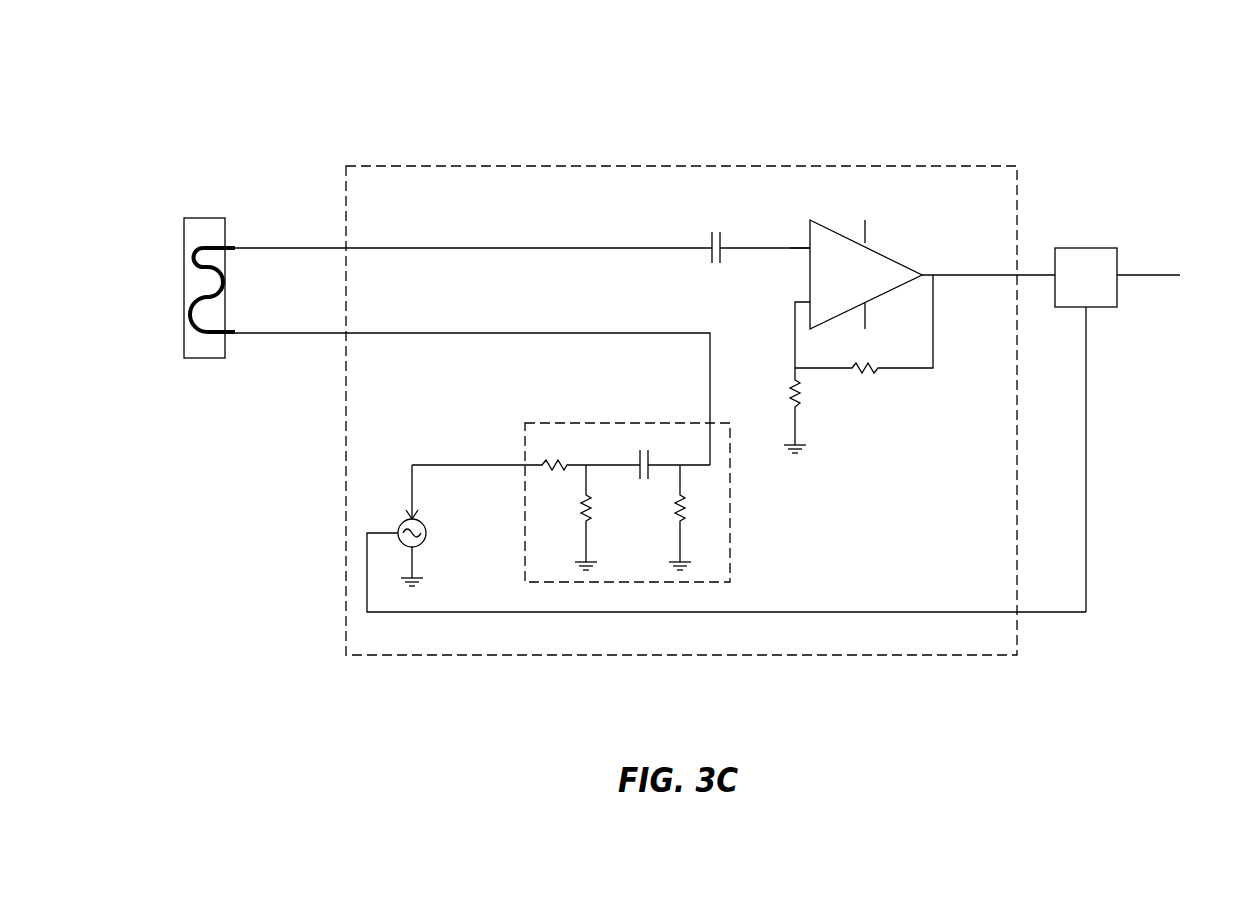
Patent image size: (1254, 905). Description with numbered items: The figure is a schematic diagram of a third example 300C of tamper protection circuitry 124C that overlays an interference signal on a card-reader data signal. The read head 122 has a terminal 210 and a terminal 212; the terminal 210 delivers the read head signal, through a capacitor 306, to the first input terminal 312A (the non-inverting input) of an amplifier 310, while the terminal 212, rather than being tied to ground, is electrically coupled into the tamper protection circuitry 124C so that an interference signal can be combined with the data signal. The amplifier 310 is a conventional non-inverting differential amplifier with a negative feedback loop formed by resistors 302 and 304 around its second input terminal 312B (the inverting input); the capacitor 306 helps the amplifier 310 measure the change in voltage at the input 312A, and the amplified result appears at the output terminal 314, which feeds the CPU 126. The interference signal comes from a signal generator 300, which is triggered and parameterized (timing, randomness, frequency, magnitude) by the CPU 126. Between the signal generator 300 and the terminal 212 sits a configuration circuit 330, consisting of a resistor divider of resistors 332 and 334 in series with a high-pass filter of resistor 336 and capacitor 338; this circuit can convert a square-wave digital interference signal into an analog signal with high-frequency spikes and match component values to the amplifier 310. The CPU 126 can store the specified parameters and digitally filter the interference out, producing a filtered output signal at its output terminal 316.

The tamper protection circuitry example 300C is at (1074, 56).
The tamper protection circuitry 124C is at (992, 166).
The read head 122 is at (208, 218).
The terminal 210 is at (247, 248).
The terminal 212 is at (247, 333).
The capacitor 306 is at (710, 232).
The first input terminal 312A is at (797, 245).
The second input terminal 312B is at (798, 300).
The amplifier 310 is at (832, 228).
The output terminal 314 is at (950, 275).
The resistor 304 is at (870, 372).
The resistor 302 is at (793, 382).
The processor 126 is at (1086, 248).
The output terminal 316 is at (1158, 275).
The configuration circuit 330 is at (571, 423).
The resistor 332 is at (555, 468).
The resistor 334 is at (590, 507).
The capacitor 338 is at (655, 478).
The resistor 336 is at (688, 507).
The signal generator 300 is at (423, 548).